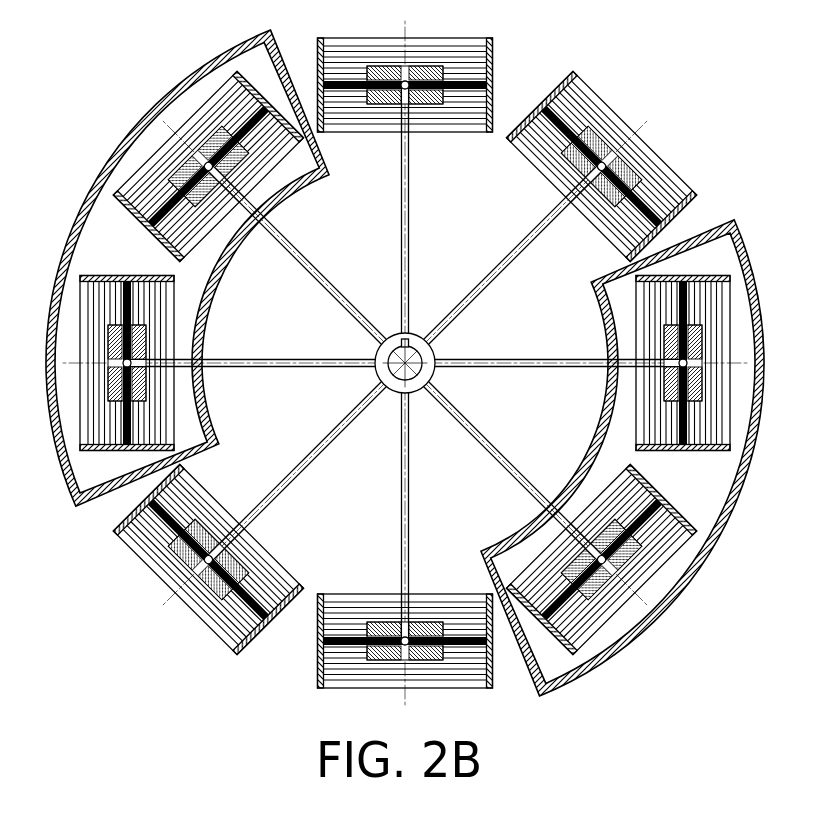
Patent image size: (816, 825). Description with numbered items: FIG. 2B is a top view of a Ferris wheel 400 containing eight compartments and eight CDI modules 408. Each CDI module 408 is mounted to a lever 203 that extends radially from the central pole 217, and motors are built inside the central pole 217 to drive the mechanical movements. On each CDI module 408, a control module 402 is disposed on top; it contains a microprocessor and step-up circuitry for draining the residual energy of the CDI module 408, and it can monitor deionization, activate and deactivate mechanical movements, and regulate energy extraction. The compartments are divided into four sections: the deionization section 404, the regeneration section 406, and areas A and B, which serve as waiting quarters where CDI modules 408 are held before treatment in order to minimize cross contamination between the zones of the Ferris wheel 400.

The Ferris wheel 400 is at (405, 371).
The control module 402 is at (634, 192).
The deionization section 404 is at (355, 688).
The regeneration section 406 is at (539, 135).
The CDI module 408 is at (602, 612).
The lever 203 is at (482, 358).
The central pole 217 is at (376, 355).